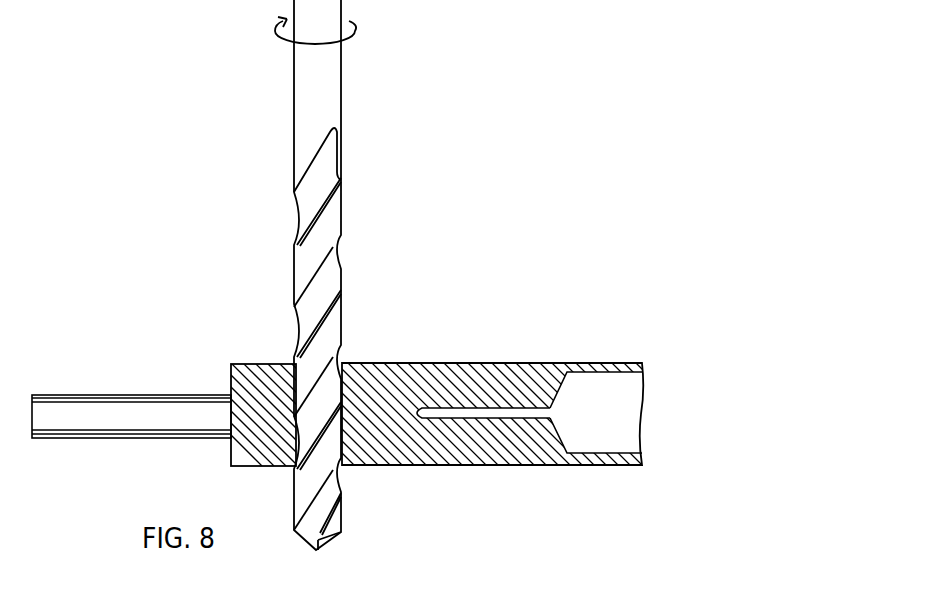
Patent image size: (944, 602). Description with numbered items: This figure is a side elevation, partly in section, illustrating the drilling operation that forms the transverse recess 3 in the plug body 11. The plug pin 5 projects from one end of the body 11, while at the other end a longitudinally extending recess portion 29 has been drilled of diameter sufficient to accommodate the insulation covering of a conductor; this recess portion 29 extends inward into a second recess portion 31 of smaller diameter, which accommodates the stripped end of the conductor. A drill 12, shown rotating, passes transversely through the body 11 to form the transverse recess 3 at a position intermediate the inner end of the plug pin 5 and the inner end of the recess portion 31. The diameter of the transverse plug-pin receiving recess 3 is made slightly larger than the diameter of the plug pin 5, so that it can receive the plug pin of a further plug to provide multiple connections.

The drill 12 is at (328, 212).
The plug pin 5 is at (142, 395).
The transverse recess 3 is at (342, 362).
The guide body 11 is at (433, 363).
The second recess portion 31 is at (465, 415).
The recess portion 29 is at (593, 385).